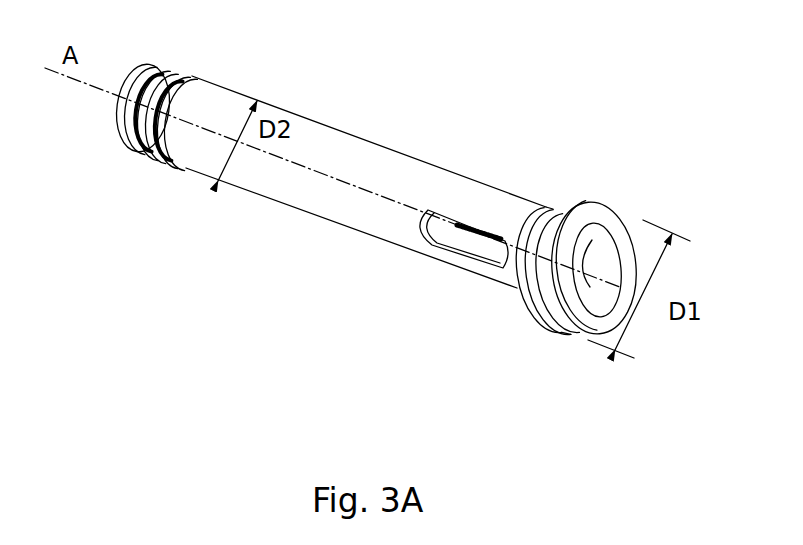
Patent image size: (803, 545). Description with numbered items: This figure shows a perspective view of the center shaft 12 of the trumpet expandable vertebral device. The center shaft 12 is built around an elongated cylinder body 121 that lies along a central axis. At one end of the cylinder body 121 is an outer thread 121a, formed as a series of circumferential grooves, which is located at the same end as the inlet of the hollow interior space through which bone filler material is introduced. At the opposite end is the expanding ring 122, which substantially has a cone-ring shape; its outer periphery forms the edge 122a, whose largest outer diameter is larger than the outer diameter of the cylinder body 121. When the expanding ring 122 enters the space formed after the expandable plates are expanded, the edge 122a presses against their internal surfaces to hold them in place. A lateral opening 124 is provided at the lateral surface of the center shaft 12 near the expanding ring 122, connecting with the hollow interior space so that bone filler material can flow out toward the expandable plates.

The center shaft 12 is at (409, 114).
The cylinder body 121 is at (285, 175).
The outer thread 121a is at (167, 66).
The expanding ring 122 is at (533, 275).
The edge 122a is at (607, 205).
The lateral opening 124 is at (468, 238).